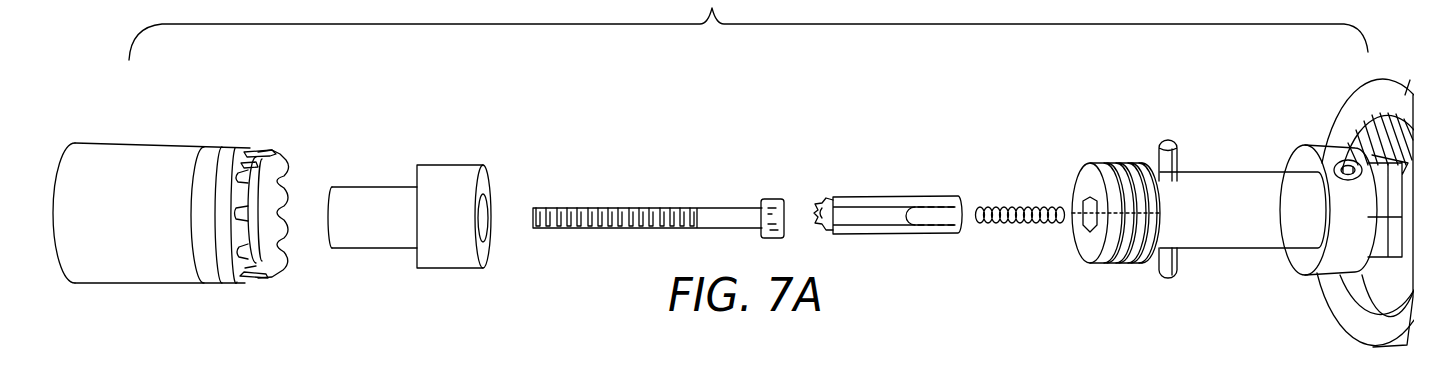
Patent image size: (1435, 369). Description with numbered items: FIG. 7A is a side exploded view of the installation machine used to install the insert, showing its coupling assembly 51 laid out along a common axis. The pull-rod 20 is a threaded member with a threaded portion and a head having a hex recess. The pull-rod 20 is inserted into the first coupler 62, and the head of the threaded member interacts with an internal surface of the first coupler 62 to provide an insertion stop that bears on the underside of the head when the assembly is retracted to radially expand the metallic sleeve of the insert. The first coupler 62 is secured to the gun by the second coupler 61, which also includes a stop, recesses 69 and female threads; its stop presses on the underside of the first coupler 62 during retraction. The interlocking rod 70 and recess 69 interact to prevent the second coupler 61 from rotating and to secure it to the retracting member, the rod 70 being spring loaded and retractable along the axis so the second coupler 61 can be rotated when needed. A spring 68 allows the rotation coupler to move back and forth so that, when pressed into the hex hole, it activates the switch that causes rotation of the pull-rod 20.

The locking assembly 51 is at (183, 137).
The second coupler 61 is at (157, 285).
The recess 69 is at (280, 247).
The first coupler 62 is at (358, 197).
The pull-rod 20 is at (617, 212).
The spring 68 is at (1020, 215).
The interlocking rod 70 is at (1167, 140).